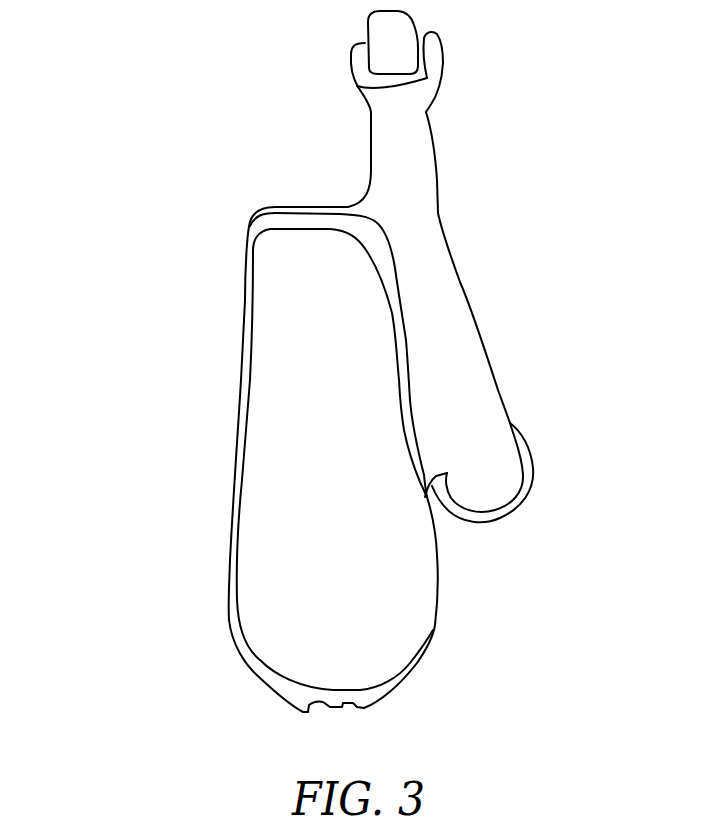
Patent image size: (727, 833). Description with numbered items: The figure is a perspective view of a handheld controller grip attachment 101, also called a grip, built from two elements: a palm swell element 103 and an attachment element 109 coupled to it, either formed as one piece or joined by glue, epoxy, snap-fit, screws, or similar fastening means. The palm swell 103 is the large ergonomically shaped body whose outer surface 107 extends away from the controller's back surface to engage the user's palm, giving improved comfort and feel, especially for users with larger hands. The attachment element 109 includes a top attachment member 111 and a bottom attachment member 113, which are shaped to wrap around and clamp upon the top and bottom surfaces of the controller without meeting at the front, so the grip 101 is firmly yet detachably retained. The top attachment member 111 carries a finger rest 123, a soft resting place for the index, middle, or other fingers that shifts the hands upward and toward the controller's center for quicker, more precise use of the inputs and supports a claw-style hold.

The handheld controller grip attachment 101 is at (186, 95).
The palm swell element 103 is at (155, 197).
The outer surface 107 is at (341, 672).
The attachment element 109 is at (610, 500).
The top attachment member 111 is at (369, 122).
The bottom attachment member 113 is at (502, 523).
The finger rest 123 is at (373, 28).